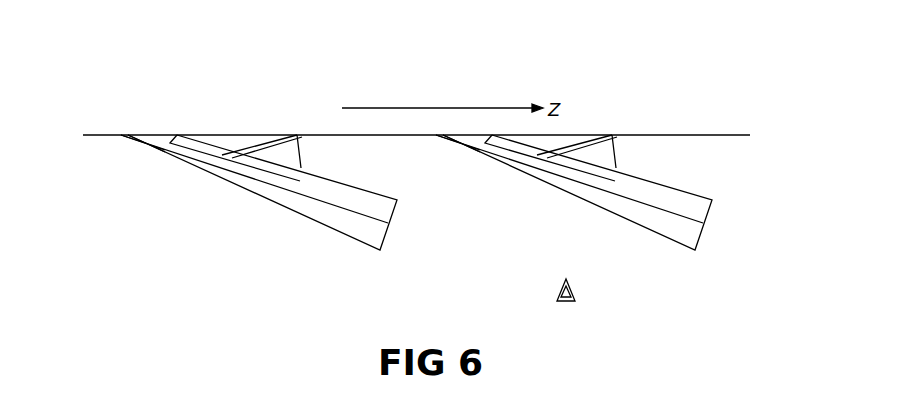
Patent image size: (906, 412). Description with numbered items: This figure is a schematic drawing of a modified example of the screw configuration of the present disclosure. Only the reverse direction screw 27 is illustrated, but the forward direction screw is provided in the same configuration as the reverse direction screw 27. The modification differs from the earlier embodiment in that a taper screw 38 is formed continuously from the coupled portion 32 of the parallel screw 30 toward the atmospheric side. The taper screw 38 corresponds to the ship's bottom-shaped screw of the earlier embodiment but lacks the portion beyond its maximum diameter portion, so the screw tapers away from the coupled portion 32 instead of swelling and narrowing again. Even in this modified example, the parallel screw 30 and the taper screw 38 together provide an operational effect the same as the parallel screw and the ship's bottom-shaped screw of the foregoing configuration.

The reverse direction screw 27 is at (300, 165).
The parallel screw 30 is at (146, 143).
The coupled portion 32 is at (213, 158).
The taper screw 38 is at (290, 208).